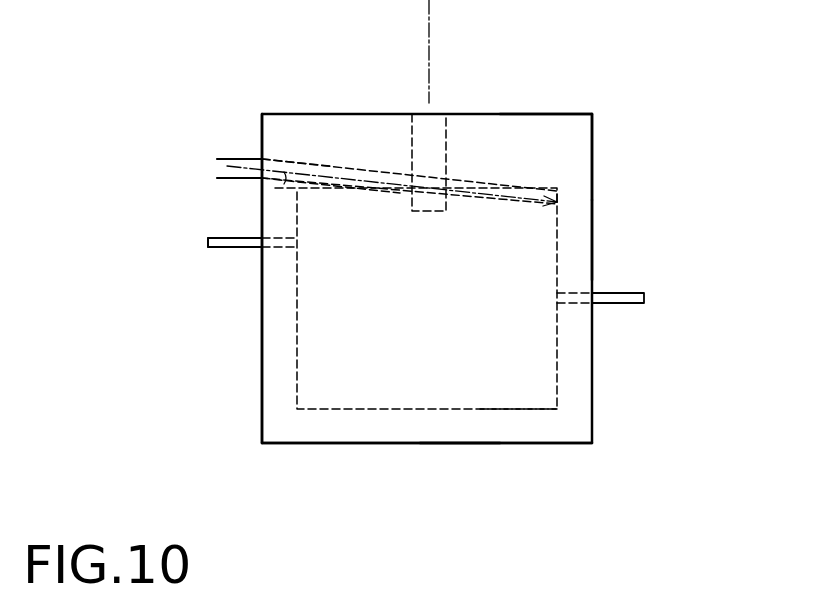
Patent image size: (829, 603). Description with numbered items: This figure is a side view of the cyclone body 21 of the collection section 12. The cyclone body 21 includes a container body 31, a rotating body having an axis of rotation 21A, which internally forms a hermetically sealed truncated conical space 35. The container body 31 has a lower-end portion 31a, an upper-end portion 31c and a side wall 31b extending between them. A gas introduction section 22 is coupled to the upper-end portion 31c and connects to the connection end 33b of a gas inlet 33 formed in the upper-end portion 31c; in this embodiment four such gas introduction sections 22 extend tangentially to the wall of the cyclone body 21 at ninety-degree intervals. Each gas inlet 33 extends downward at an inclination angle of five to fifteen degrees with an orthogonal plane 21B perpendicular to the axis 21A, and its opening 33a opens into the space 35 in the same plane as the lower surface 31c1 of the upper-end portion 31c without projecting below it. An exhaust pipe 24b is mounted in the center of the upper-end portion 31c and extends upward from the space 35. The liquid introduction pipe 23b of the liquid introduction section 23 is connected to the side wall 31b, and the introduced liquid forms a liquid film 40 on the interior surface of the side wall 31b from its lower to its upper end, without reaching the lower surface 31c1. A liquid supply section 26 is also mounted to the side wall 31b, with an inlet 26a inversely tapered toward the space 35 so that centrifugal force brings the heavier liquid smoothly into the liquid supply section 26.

The collection section 12 is at (604, 95).
The cyclone body 21 is at (253, 427).
The axis of rotation 21A is at (429, 45).
The orthogonal plane 21B is at (478, 203).
The gas introduction section 22 is at (218, 157).
The liquid introduction section 23 is at (220, 250).
The liquid introduction pipe 23b is at (235, 242).
The exhaust pipe 24b is at (427, 125).
The liquid supply section 26 is at (593, 317).
The inlet 26a is at (557, 288).
The container body 31 is at (348, 428).
The lower-end portion 31a is at (458, 432).
The side wall 31b is at (577, 230).
The upper-end portion 31c is at (577, 165).
The lower surface 31c1 is at (538, 187).
The gas inlet 33 is at (306, 160).
The opening 33a is at (378, 198).
The connection end 33b is at (262, 160).
The truncated conical space 35 is at (515, 378).
The liquid film 40 is at (305, 348).